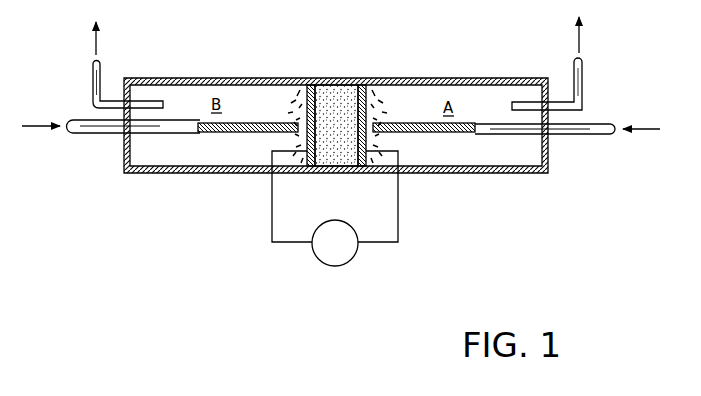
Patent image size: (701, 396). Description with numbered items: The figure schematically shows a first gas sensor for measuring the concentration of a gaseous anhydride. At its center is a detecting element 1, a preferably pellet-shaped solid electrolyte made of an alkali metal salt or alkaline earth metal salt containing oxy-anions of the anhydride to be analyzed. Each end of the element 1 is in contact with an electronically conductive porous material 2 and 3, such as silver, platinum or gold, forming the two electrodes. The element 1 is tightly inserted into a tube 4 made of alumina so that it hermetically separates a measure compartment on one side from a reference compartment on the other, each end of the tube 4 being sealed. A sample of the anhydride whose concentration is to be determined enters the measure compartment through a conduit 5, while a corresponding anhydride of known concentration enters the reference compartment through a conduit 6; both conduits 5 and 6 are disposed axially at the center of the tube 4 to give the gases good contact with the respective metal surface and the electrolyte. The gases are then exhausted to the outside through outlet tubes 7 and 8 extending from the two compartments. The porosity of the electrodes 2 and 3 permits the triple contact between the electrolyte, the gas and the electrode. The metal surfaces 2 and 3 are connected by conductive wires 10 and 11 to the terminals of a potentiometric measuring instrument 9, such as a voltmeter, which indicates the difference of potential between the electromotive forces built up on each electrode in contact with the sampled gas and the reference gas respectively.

The detecting element 1 is at (338, 99).
The electronically conductive porous material 2 is at (365, 89).
The electronically conductive porous material 3 is at (306, 89).
The tube 4 is at (527, 173).
The conduit 5 is at (587, 131).
The conduit 6 is at (90, 131).
The outlet tube 7 is at (583, 85).
The outlet tube 8 is at (92, 80).
The potentiometric measuring instrument 9 is at (322, 258).
The conductive wire 10 is at (398, 212).
The conductive wire 11 is at (272, 200).